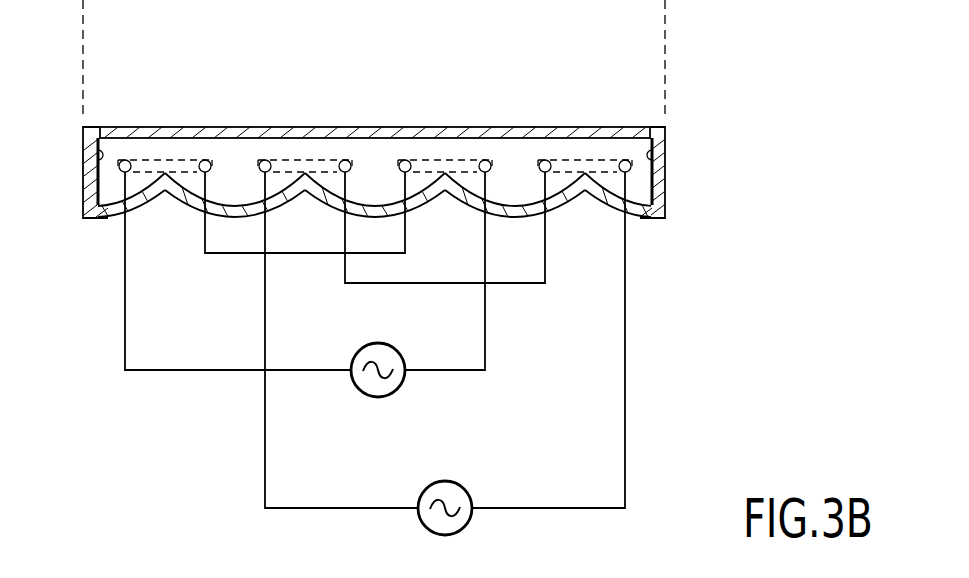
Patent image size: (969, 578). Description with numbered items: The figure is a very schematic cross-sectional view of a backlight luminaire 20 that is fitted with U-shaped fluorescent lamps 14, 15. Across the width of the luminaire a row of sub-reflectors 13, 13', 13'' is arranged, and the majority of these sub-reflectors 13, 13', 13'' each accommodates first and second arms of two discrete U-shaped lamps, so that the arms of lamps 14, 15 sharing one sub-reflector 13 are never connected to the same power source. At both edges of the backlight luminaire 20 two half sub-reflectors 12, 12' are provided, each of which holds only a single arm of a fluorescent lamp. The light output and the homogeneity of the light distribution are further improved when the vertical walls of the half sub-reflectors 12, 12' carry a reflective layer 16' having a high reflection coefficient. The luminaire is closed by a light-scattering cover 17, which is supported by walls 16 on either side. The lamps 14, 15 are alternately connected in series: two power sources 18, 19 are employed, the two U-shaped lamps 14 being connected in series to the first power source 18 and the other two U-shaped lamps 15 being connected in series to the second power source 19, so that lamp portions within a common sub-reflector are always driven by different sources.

The half sub-reflector 12 is at (95, 214).
The half sub-reflector 12' is at (651, 222).
The sub-reflector 13 is at (235, 233).
The sub-reflector 13' is at (379, 222).
The sub-reflector 13'' is at (515, 222).
The U-shaped fluorescent lamp 14 is at (178, 160).
The U-shaped fluorescent lamp 15 is at (313, 160).
The wall 16 is at (374, 172).
The reflective layer 16' is at (378, 136).
The light-scattering cover 17 is at (527, 127).
The first power source 18 is at (358, 352).
The second power source 19 is at (426, 490).
The backlight luminaire 20 is at (644, 101).